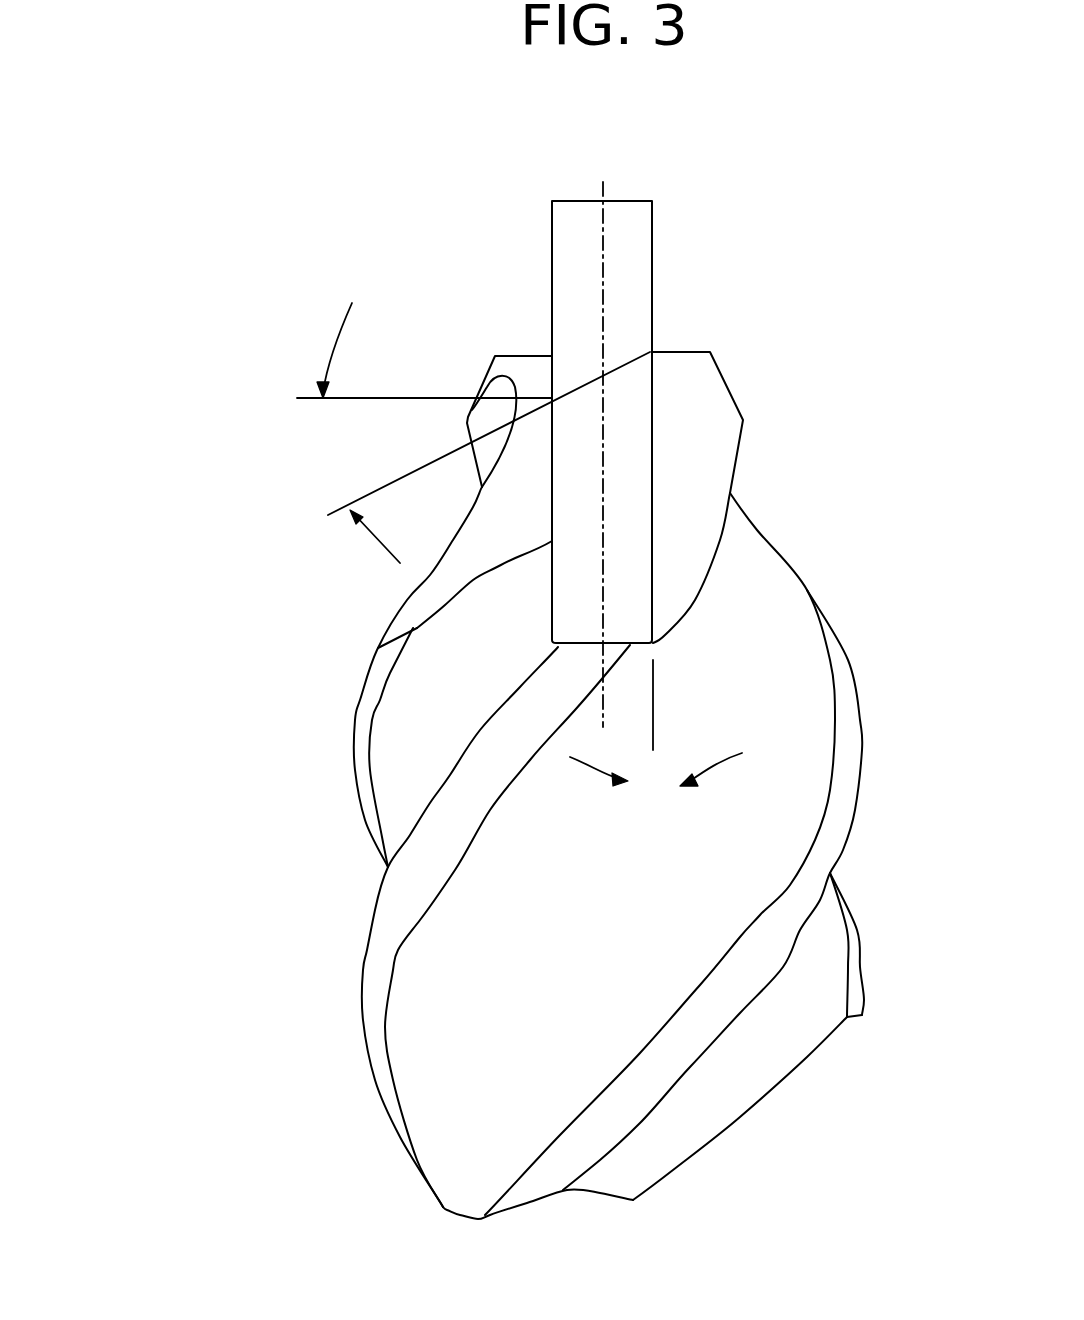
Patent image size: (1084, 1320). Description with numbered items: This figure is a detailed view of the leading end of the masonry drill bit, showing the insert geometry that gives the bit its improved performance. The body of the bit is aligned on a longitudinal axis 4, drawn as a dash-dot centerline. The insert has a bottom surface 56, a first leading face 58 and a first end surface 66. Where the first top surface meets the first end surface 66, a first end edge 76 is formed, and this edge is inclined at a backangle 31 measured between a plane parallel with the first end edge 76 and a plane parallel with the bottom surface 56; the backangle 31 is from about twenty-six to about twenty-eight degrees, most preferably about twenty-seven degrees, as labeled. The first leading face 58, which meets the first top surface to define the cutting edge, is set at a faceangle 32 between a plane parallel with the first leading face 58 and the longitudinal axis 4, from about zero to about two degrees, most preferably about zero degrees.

The longitudinal axis 4 is at (618, 182).
The backangle 31 is at (250, 464).
The faceangle 32 is at (665, 830).
The bottom surface 56 is at (580, 655).
The first leading face 58 is at (668, 577).
The first end surface 66 is at (637, 482).
The first end edge 76 is at (630, 385).